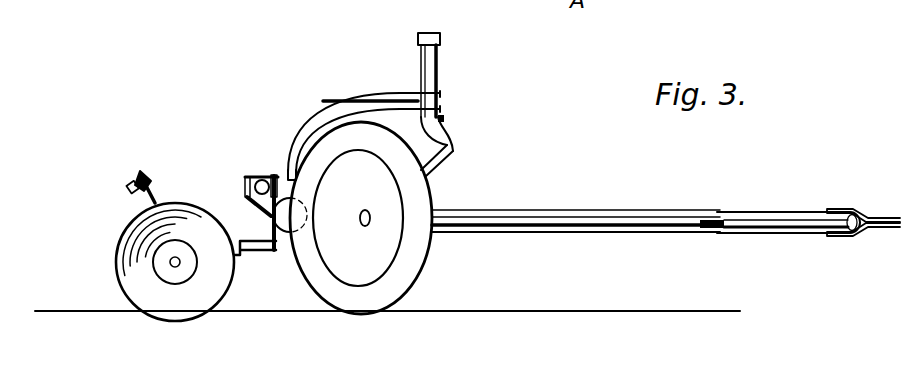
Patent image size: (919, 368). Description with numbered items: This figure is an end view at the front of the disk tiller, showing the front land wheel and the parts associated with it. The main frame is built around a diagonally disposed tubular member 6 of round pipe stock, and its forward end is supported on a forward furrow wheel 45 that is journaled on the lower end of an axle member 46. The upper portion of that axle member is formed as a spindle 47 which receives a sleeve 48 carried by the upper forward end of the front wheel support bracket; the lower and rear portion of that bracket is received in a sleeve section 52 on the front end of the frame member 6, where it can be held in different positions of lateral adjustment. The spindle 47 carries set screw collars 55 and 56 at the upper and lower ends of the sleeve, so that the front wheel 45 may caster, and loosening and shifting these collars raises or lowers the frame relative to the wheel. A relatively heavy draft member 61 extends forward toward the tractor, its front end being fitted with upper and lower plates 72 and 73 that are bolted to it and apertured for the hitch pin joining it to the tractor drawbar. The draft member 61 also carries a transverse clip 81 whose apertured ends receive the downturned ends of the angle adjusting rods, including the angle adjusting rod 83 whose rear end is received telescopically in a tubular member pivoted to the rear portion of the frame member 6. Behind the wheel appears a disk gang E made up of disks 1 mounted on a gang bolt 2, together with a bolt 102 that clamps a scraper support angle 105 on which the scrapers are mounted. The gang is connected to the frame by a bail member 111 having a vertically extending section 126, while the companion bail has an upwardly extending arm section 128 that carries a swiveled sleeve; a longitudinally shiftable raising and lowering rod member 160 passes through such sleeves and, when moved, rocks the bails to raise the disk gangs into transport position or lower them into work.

The disk 1 is at (128, 277).
The gang bolt 2 is at (172, 265).
The disk gang E is at (112, 234).
The diagonally disposed tubular member 6 is at (275, 250).
The forward furrow wheel 45 is at (406, 275).
The axle member 46 is at (490, 172).
The spindle 47 is at (462, 26).
The sleeve 48 is at (347, 90).
The sleeve section 52 is at (287, 174).
The set screw collar 55 is at (418, 43).
The set screw collar 56 is at (445, 119).
The draft member 61 is at (769, 213).
The upper plate 72 is at (861, 213).
The lower plate 73 is at (856, 238).
The transverse clip 81 is at (718, 219).
The angle adjusting rod 83 is at (573, 212).
The bolt 102 is at (147, 177).
The scraper support angle 105 is at (131, 183).
The bail member 111 is at (259, 258).
The vertically extending section 126 is at (300, 202).
The upwardly extending arm section 128 is at (243, 204).
The raising and lowering rod member 160 is at (253, 177).